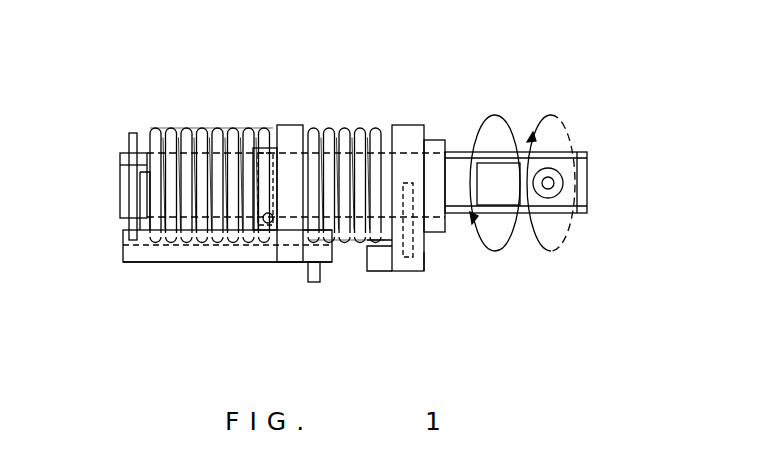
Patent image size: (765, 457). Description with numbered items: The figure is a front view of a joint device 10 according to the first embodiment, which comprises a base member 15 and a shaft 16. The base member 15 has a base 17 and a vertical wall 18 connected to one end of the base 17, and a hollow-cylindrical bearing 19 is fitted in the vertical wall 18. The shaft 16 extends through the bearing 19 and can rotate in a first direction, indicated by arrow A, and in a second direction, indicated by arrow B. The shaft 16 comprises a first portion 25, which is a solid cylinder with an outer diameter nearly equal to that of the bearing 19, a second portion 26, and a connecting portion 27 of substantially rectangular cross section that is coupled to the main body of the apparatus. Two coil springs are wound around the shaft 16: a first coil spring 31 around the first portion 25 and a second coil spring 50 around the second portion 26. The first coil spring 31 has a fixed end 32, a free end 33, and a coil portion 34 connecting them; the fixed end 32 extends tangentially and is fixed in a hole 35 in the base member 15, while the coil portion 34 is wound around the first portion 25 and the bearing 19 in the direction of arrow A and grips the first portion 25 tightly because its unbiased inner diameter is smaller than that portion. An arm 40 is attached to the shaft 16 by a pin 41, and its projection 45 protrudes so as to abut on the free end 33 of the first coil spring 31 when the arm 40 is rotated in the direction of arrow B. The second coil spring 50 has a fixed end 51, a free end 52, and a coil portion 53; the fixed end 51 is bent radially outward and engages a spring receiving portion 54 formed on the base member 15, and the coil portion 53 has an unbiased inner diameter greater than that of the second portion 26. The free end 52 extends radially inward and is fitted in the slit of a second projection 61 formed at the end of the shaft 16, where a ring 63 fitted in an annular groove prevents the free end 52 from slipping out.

The joint device 10 is at (117, 83).
The base member 15 is at (123, 253).
The shaft 16 is at (455, 152).
The base 17 is at (175, 255).
The vertical wall 18 is at (293, 125).
The bearing 19 is at (340, 125).
The first portion 25 is at (380, 122).
The second portion 26 is at (203, 128).
The connecting portion 27 is at (583, 178).
The first coil spring 31 is at (363, 166).
The fixed end 32 is at (316, 283).
The free end 33 is at (383, 268).
The coil portion 34 is at (350, 250).
The hole 35 is at (300, 252).
The arm 40 is at (432, 188).
The pin 41 is at (427, 252).
The projection 45 is at (372, 271).
The second coil spring 50 is at (235, 118).
The fixed end 51 is at (265, 235).
The free end 52 is at (120, 198).
The coil portion 53 is at (172, 125).
The spring receiving portion 54 is at (255, 200).
The second projection 61 is at (120, 164).
The ring 63 is at (128, 137).
The arrow A is at (491, 195).
The arrow B is at (551, 167).